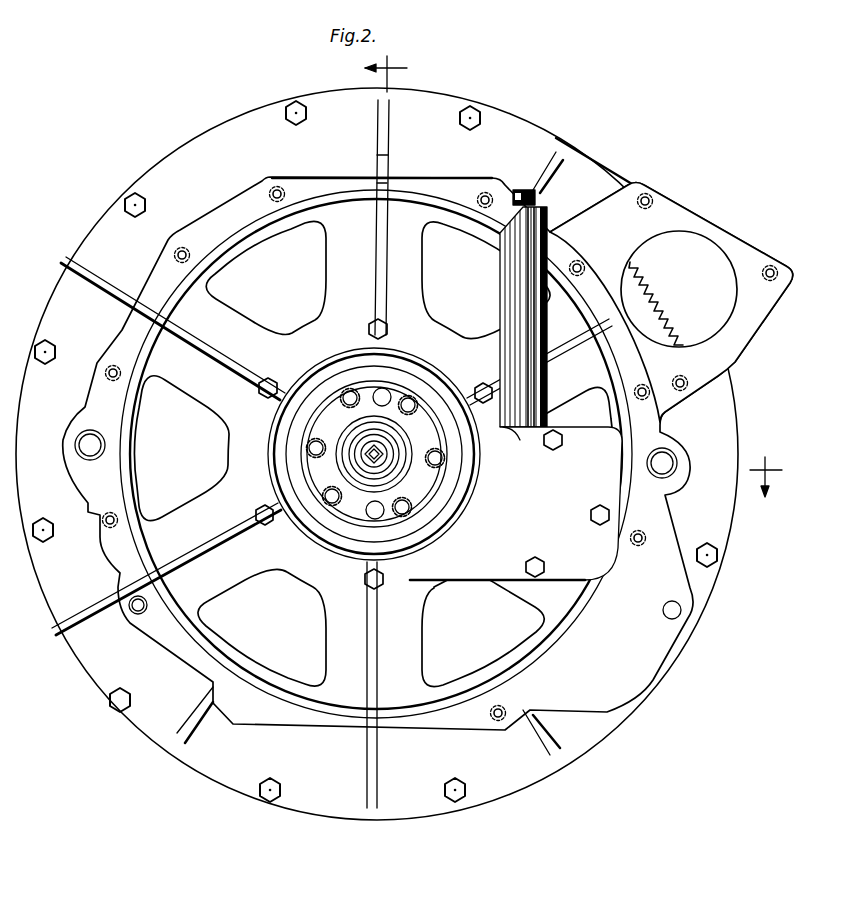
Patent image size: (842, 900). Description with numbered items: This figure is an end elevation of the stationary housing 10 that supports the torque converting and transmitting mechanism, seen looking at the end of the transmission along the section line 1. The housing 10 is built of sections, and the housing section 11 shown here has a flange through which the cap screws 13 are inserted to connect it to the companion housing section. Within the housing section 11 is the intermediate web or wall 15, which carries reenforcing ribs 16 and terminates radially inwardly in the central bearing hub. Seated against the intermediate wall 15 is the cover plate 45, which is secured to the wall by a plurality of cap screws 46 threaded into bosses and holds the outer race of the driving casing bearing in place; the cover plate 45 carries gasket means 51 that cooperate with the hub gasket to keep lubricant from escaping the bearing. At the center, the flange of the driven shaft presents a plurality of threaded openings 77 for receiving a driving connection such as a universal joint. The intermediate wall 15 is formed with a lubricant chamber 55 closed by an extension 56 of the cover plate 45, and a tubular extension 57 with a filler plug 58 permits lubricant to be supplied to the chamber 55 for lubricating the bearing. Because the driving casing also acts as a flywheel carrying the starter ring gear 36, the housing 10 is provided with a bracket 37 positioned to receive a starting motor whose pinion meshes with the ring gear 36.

The section line 1 is at (575, 276).
The stationary housing 10 is at (148, 154).
The housing section 11 is at (98, 233).
The cap screws 13 is at (120, 703).
The intermediate web or wall 15 is at (417, 283).
The reenforcing ribs 16 is at (210, 355).
The starter ring gear 36 is at (660, 292).
The bracket 37 is at (708, 213).
The cover plate 45 is at (327, 563).
The cap screws 46 is at (277, 385).
The gasket means 51 is at (352, 377).
The lubricant chamber 55 is at (603, 417).
The extension of the cover plate 56 is at (537, 427).
The tubular extension 57 is at (515, 277).
The filler plug 58 is at (533, 175).
The threaded openings 77 is at (410, 508).